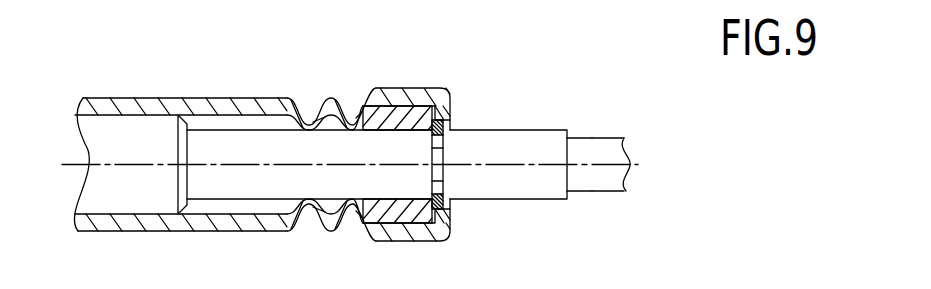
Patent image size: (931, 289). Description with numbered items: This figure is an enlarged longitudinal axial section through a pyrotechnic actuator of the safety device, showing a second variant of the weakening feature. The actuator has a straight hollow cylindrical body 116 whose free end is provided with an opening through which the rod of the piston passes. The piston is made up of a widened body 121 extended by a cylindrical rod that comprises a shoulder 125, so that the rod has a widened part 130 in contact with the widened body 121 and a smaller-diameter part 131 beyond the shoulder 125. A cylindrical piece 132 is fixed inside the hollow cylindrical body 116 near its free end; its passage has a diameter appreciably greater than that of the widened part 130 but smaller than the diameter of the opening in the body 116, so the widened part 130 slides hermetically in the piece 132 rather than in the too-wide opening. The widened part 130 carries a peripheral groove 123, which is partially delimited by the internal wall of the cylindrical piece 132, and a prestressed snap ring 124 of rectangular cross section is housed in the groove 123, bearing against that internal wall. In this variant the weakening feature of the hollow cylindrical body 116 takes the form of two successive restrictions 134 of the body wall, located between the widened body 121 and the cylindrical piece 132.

The straight hollow cylindrical body 116 is at (130, 102).
The widened body 121 is at (130, 185).
The two successive restrictions 134 is at (328, 97).
The cylindrical piece 132 is at (415, 115).
The prestressed snap ring 124 is at (446, 134).
The peripheral groove 123 is at (446, 190).
The widened part 130 is at (512, 182).
The shoulder 125 is at (577, 152).
The smaller-diameter part 131 is at (593, 180).